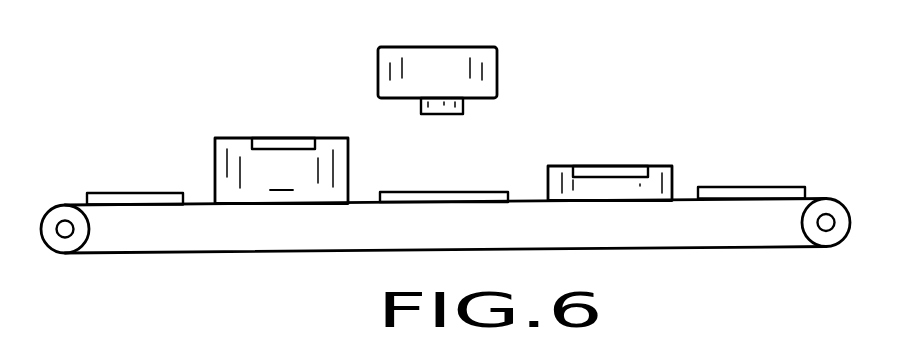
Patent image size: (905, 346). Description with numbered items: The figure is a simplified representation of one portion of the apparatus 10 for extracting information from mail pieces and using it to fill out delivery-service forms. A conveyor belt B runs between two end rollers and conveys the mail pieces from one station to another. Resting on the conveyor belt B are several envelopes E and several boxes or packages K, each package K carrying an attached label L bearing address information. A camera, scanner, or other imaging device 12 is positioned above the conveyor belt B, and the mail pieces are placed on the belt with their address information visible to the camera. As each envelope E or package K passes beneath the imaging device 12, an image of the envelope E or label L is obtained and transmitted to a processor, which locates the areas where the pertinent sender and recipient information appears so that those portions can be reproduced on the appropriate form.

The apparatus 10 is at (706, 84).
The imaging device 12 is at (457, 83).
The conveyor belt B is at (290, 251).
The envelope E is at (158, 193).
The package K is at (658, 166).
The label L is at (293, 138).